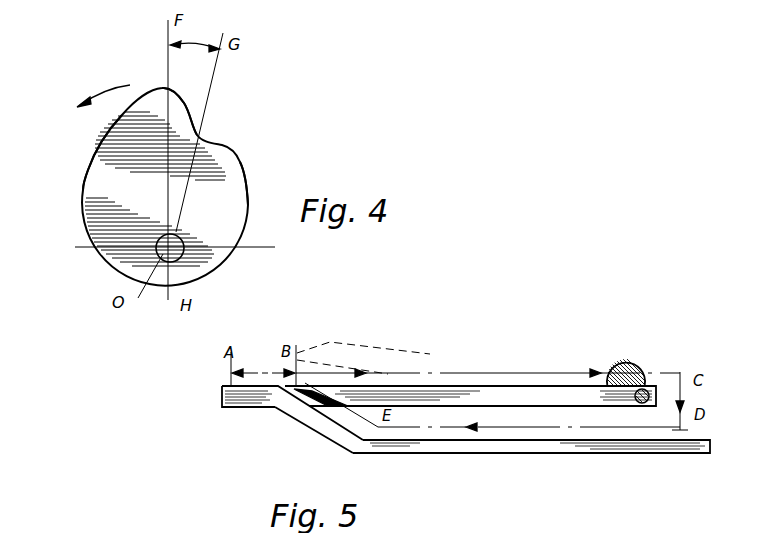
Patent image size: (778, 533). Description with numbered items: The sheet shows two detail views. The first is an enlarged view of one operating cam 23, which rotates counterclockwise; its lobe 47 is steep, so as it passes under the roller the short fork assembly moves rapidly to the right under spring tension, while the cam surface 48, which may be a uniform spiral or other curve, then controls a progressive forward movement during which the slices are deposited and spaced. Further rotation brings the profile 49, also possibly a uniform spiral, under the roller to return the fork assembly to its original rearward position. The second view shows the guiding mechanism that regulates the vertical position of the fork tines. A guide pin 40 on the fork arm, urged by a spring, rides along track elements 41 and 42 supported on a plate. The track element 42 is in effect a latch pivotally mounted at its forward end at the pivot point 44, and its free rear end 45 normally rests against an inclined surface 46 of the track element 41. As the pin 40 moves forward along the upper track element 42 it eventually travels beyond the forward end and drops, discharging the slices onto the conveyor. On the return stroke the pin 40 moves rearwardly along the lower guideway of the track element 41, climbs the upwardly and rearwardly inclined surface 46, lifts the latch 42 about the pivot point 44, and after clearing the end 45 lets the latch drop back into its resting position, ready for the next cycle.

In FIG. 4, the cam 23 is at (218, 165).
In FIG. 4, the lobe 47 is at (191, 118).
In FIG. 4, the cam surface 48 is at (246, 218).
In FIG. 4, the profile 49 is at (82, 195).
In FIG. 5, the guide pin 40 is at (622, 362).
In FIG. 5, the track element 41 is at (490, 443).
In FIG. 5, the track element 42 is at (437, 393).
In FIG. 5, the pivot point 44 is at (650, 390).
In FIG. 5, the free rear end 45 is at (311, 397).
In FIG. 5, the inclined surface 46 is at (333, 417).